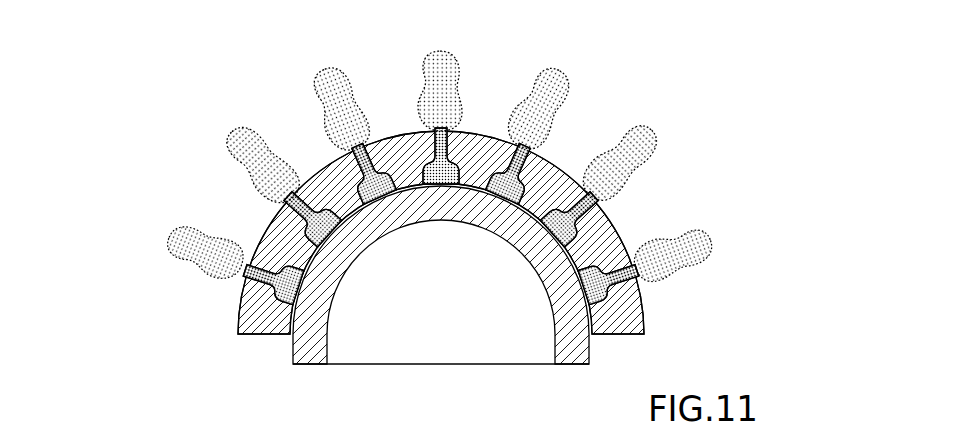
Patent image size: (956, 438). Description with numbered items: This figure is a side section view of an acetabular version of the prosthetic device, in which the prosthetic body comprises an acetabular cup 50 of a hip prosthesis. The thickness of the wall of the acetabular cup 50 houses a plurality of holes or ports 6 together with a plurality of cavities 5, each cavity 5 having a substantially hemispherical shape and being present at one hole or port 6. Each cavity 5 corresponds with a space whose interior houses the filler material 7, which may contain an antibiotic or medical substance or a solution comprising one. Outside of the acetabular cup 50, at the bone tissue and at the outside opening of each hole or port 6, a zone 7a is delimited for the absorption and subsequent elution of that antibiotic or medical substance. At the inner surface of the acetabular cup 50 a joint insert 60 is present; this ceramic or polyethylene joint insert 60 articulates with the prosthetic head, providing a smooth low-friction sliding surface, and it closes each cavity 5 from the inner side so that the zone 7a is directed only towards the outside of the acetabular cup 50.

The cavity 5 is at (572, 187).
The hole or port 6 is at (442, 130).
The filler material 7 is at (377, 173).
The zone for absorption and elution 7a is at (338, 82).
The acetabular cup 50 is at (237, 317).
The joint insert 60 is at (567, 358).